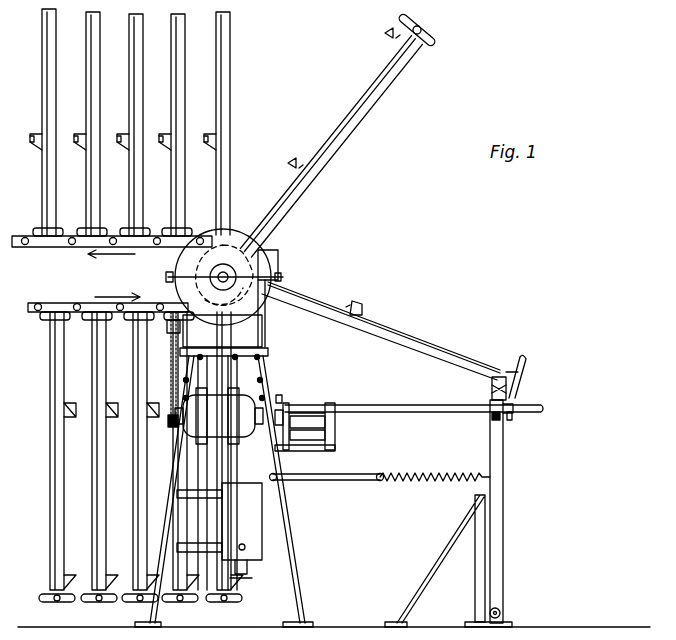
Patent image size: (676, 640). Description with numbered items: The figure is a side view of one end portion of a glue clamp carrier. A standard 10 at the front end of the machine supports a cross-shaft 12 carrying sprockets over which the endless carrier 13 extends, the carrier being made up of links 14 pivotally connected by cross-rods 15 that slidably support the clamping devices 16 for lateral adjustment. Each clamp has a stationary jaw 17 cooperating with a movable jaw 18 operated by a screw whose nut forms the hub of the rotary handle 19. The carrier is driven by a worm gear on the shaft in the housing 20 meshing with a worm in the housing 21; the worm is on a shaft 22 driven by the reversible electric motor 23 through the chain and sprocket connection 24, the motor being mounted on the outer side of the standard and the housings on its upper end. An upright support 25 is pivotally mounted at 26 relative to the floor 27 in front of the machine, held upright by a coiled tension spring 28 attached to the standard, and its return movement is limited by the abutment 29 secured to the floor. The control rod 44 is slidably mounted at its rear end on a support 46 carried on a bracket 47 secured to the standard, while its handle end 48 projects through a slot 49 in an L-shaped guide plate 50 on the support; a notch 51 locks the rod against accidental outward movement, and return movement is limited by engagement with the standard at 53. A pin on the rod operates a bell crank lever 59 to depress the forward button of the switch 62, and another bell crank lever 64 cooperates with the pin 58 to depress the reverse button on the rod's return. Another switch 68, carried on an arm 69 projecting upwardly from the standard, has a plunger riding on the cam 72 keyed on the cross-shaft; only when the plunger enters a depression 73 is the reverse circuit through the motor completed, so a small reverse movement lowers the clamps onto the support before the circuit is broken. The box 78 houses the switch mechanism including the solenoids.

The standard 10 is at (290, 545).
The cross-shaft 12 is at (226, 275).
The endless carrier 13 is at (147, 257).
The link 14 is at (48, 247).
The cross-rod 15 is at (70, 230).
The clamping device 16 is at (330, 130).
The stationary jaw 17 is at (522, 365).
The movable jaw 18 is at (363, 308).
The rotary handle 19 is at (520, 378).
The housing 20 is at (237, 228).
The housing 21 is at (240, 333).
The shaft 22 is at (165, 330).
The reversible electric motor 23 is at (210, 420).
The chain and sprocket connection 24 is at (170, 368).
The upright support 25 is at (503, 496).
The pivot 26 is at (500, 612).
The floor 27 is at (570, 627).
The coiled tension spring 28 is at (424, 482).
The abutment 29 is at (480, 548).
The control rod 44 is at (392, 412).
The support 46 is at (300, 408).
The bracket 47 is at (298, 455).
The handle end 48 is at (545, 410).
The slot 49 is at (490, 395).
The L-shaped guide plate 50 is at (497, 416).
The notch 51 is at (510, 412).
The stop engagement with standard 53 is at (280, 403).
The pin 58 is at (330, 405).
The bell crank lever 59 is at (336, 398).
The switch 62 is at (322, 440).
The bell crank lever 64 is at (330, 420).
The switch 68 is at (280, 258).
The arm 69 is at (268, 325).
The cam 72 is at (210, 232).
The depression 73 is at (228, 304).
The box 78 is at (255, 518).